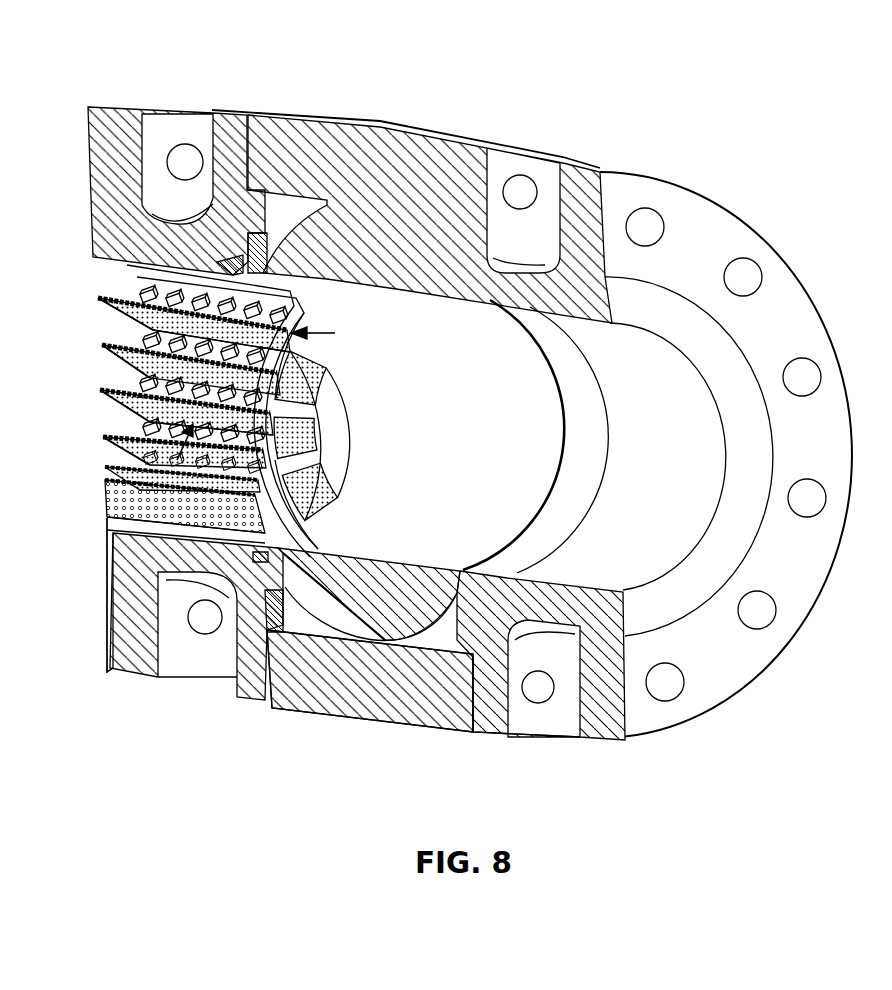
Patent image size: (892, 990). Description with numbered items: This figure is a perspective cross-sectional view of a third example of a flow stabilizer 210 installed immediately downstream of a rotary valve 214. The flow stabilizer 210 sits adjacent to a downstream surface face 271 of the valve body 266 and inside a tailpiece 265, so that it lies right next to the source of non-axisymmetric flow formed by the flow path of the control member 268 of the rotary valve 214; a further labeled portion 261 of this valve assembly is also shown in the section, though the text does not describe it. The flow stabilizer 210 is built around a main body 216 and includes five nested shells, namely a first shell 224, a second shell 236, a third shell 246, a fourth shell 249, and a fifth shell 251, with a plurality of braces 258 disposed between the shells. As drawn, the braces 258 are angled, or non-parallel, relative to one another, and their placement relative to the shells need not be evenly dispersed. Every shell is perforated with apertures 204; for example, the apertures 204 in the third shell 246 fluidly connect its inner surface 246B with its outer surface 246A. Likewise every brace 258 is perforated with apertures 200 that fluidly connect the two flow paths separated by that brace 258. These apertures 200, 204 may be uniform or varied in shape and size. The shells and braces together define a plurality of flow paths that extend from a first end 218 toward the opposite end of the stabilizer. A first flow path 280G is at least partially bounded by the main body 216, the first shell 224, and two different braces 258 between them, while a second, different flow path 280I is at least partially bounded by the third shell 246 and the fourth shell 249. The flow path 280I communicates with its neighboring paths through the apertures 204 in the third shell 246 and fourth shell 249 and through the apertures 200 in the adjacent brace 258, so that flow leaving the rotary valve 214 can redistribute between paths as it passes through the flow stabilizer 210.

The apertures 200 is at (247, 305).
The apertures 204 is at (340, 300).
The flow stabilizer 210 is at (79, 627).
The rotary valve 214 is at (524, 87).
The main body 216 is at (345, 364).
The first end 218 is at (372, 421).
The first shell 224 is at (333, 389).
The second shell 236 is at (335, 430).
The third shell 246 is at (322, 506).
The outer surface 246A is at (330, 405).
The inner surface 246B is at (335, 456).
The fourth shell 249 is at (302, 509).
The fifth shell 251 is at (256, 556).
The braces 258 is at (286, 306).
The lower block 261 is at (474, 736).
The tailpiece 265 is at (143, 643).
The valve body 266 is at (416, 695).
The control member 268 is at (343, 603).
The downstream surface face 271 is at (267, 702).
The first flow path 280G is at (312, 340).
The second flow path 280I is at (130, 400).